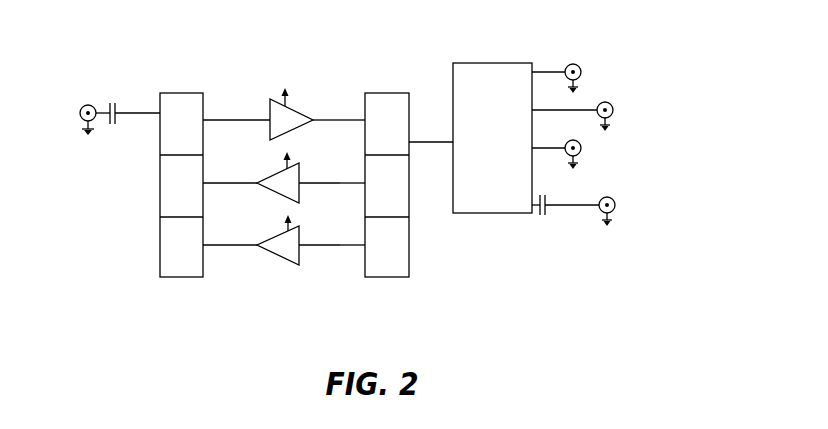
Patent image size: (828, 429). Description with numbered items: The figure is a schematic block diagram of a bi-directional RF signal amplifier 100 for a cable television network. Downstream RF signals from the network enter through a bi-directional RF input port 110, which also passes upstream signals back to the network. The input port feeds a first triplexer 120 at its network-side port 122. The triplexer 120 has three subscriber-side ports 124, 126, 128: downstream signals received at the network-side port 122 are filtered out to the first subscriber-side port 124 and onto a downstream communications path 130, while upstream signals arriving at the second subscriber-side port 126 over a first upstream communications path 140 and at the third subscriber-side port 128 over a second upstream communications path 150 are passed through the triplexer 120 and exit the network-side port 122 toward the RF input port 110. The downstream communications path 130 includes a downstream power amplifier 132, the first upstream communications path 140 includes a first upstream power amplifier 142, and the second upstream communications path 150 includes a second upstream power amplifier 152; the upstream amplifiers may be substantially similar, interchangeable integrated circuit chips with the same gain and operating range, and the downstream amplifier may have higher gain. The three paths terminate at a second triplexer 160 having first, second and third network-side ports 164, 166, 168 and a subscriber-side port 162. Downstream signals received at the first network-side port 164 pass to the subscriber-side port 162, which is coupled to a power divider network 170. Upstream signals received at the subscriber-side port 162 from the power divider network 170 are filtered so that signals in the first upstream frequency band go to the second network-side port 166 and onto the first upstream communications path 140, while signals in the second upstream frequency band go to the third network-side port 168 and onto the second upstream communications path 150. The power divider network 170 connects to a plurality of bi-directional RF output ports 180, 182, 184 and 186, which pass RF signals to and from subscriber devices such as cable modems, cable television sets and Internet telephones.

The RF signal amplifier 100 is at (226, 52).
The bi-directional RF input port 110 is at (79, 119).
The triplexer 120 is at (183, 280).
The network-side port 122 is at (128, 117).
The first subscriber-side port 124 is at (235, 129).
The second subscriber-side port 126 is at (230, 194).
The third subscriber-side port 128 is at (230, 255).
The downstream communications path 130 is at (325, 110).
The downstream power amplifier 132 is at (268, 128).
The first upstream communications path 140 is at (319, 174).
The first upstream power amplifier 142 is at (276, 194).
The second upstream communications path 150 is at (319, 236).
The second upstream power amplifier 152 is at (276, 257).
The second triplexer 160 is at (385, 279).
The subscriber-side port 162 is at (431, 154).
The first network-side port 164 is at (350, 132).
The second network-side port 166 is at (350, 192).
The third network-side port 168 is at (350, 254).
The power divider network 170 is at (452, 200).
The bi-directional RF output port 180 is at (578, 68).
The bi-directional RF output port 182 is at (600, 110).
The bi-directional RF output port 184 is at (588, 155).
The bi-directional RF output port 186 is at (612, 203).